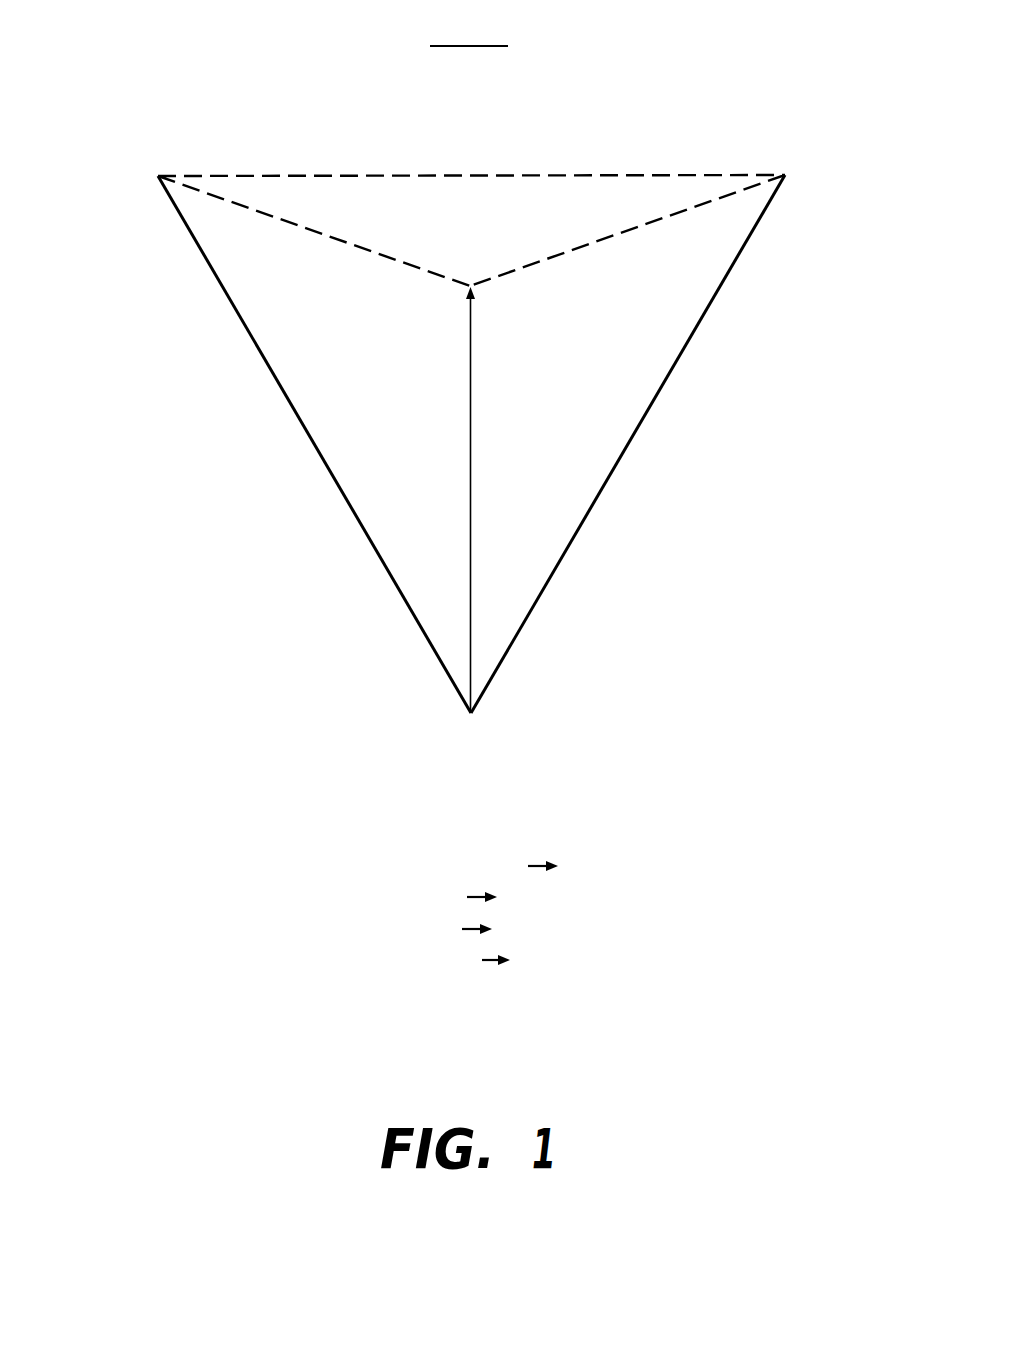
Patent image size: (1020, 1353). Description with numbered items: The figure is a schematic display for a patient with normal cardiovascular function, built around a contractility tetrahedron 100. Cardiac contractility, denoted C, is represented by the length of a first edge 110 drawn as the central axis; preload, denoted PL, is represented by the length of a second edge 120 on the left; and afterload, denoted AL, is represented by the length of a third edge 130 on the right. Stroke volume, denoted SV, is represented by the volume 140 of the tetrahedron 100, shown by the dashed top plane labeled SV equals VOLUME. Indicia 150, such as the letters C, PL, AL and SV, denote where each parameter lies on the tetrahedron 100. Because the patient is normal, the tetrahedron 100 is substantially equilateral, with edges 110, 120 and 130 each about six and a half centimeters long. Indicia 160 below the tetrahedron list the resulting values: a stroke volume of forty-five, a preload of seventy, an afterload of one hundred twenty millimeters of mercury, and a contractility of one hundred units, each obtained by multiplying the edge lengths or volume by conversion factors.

The contractility tetrahedron 100 is at (814, 97).
The first edge 110 is at (468, 372).
The second edge 120 is at (212, 276).
The third edge 130 is at (730, 278).
The volume 140 is at (283, 240).
The indicia 150 is at (518, 417).
The indicia 160 is at (212, 917).